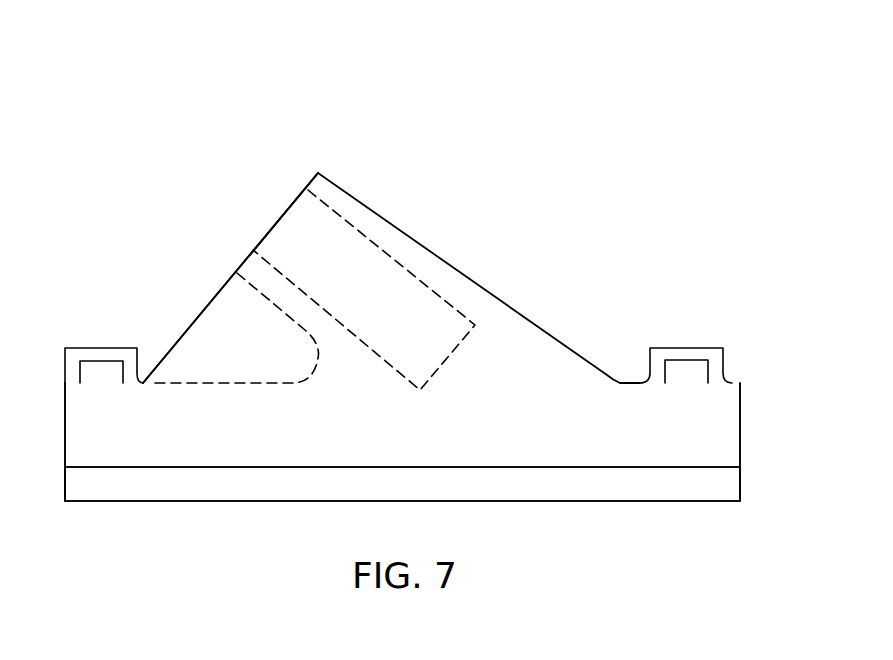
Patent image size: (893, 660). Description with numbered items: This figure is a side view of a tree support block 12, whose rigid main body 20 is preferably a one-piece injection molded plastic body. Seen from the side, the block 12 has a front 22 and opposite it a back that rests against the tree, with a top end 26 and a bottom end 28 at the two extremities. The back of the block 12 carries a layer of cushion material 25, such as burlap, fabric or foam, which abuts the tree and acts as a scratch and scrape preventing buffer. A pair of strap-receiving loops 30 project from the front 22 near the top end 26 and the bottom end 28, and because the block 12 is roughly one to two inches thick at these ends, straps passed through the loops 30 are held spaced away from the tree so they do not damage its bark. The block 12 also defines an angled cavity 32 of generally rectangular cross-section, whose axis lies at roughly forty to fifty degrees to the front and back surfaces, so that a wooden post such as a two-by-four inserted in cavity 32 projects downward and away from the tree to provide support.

The support block 12 is at (183, 166).
The rigid main body 20 is at (386, 444).
The front 22 is at (480, 282).
The cushion material 25 is at (253, 493).
The top end 26 is at (740, 424).
The bottom end 28 is at (65, 424).
The strap-receiving loops 30 is at (90, 348).
The angled cavity 32 is at (289, 225).